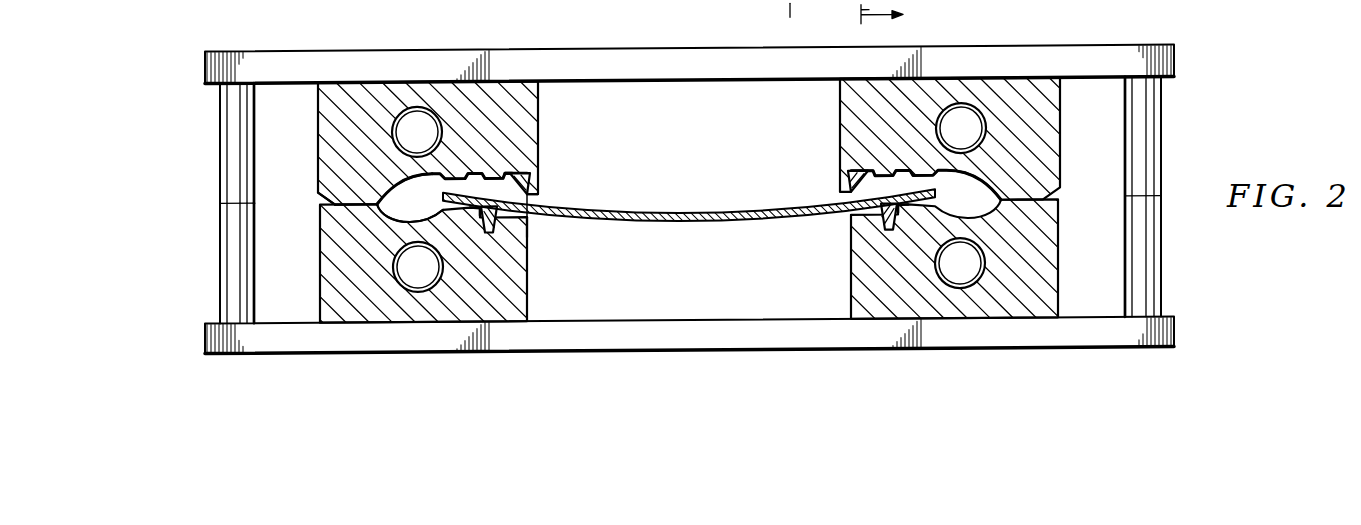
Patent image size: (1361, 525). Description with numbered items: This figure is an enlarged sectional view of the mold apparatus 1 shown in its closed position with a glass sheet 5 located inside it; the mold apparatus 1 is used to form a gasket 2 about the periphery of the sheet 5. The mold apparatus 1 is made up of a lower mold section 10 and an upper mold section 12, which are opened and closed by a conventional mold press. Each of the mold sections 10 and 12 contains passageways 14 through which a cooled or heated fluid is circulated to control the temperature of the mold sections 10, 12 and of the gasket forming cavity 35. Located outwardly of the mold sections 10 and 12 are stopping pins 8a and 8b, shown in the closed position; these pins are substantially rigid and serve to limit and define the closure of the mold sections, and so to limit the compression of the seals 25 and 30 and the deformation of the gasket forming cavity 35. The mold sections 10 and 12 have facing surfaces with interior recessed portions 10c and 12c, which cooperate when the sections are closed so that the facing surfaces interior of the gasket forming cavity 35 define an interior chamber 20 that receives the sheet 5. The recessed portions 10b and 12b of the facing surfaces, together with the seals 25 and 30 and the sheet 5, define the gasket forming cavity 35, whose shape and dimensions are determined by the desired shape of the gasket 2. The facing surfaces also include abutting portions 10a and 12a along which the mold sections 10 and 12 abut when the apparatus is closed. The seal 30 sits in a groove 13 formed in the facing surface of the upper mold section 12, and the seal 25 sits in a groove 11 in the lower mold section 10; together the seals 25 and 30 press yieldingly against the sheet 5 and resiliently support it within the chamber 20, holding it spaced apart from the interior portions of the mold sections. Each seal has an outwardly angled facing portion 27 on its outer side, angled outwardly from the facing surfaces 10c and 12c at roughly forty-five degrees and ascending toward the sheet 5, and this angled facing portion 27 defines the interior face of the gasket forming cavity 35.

The mold apparatus 1 is at (727, 31).
The gasket 2 is at (856, 17).
The glass sheet 5 is at (671, 212).
The stopping pin 8a is at (220, 266).
The stopping pin 8b is at (220, 140).
The lower mold section 10 is at (320, 284).
The abutting portion 10a is at (360, 200).
The recessed portion 10b is at (392, 220).
The interior recessed portion 10c is at (533, 216).
The groove 11 is at (527, 218).
The upper mold section 12 is at (318, 125).
The abutting portion 12a is at (331, 203).
The recessed portion 12b is at (458, 171).
The interior recessed portion 12c is at (540, 193).
The groove 13 is at (513, 170).
The passageways 14 is at (428, 112).
The interior chamber 20 is at (739, 153).
The seal 25 is at (489, 234).
The angled facing portion 27 is at (481, 216).
The seal 30 is at (532, 178).
The gasket forming cavity 35 is at (421, 198).